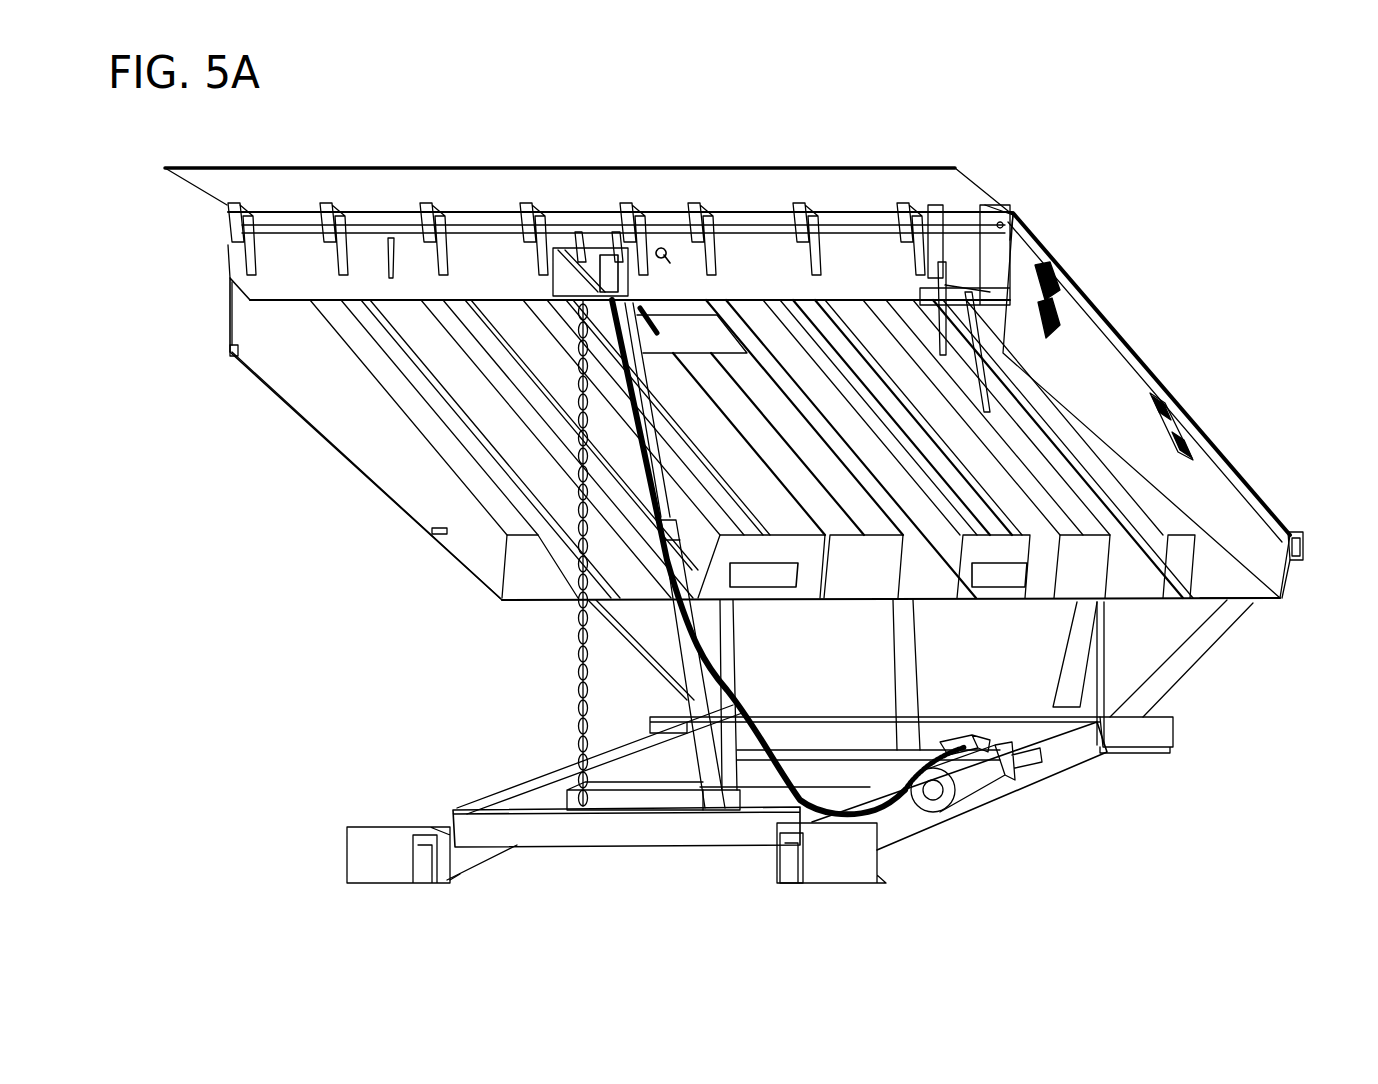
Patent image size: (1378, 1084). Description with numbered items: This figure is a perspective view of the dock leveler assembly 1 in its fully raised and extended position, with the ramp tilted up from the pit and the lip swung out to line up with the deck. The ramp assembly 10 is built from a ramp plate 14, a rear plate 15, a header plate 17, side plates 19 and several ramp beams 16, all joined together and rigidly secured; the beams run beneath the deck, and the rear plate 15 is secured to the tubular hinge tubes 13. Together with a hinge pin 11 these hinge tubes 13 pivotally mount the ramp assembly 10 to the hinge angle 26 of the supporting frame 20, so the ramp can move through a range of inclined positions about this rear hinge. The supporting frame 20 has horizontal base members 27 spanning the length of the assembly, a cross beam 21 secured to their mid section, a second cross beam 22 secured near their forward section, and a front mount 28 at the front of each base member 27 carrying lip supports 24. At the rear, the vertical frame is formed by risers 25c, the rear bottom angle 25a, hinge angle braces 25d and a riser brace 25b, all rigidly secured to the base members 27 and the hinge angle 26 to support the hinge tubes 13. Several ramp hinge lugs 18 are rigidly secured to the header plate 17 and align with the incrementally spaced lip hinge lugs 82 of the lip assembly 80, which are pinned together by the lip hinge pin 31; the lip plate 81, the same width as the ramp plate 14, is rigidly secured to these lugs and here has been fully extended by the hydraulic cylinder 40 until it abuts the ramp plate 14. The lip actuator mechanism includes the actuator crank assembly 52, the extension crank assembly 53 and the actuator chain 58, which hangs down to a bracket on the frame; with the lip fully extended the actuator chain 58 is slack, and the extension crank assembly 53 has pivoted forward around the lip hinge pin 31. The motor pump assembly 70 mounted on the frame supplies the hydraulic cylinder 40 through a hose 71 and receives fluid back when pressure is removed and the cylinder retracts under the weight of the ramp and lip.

The dock leveler assembly 1 is at (1030, 171).
The ramp assembly 10 is at (1115, 305).
The hinge pin 11 is at (1302, 548).
The hinge tubes 13 is at (1298, 566).
The ramp plate 14 is at (1060, 258).
The rear plate 15 is at (1245, 600).
The ramp beams 16 is at (1123, 500).
The header plate 17 is at (255, 290).
The ramp hinge lugs 18 is at (258, 250).
The side plates 19 is at (287, 395).
The supporting frame 20 is at (514, 770).
The cross beam 21 is at (640, 800).
The second cross beam 22 is at (600, 833).
The lip supports 24 is at (790, 860).
The rear bottom angle 25a is at (1160, 742).
The riser brace 25b is at (1062, 684).
The risers 25c is at (1100, 680).
The hinge angle braces 25d is at (1213, 632).
The hinge angle 26 is at (1292, 528).
The base members 27 is at (890, 822).
The front mount 28 is at (855, 860).
The lip hinge pin 31 is at (862, 235).
The hydraulic cylinder 40 is at (700, 790).
The actuator crank assembly 52 is at (553, 258).
The extension crank assembly 53 is at (625, 272).
The actuator chain 58 is at (575, 685).
The motor pump assembly 70 is at (975, 790).
The hydraulic hose 71 is at (755, 725).
The lip assembly 80 is at (800, 156).
The lip plate 81 is at (733, 185).
The lip hinge lugs 82 is at (225, 222).